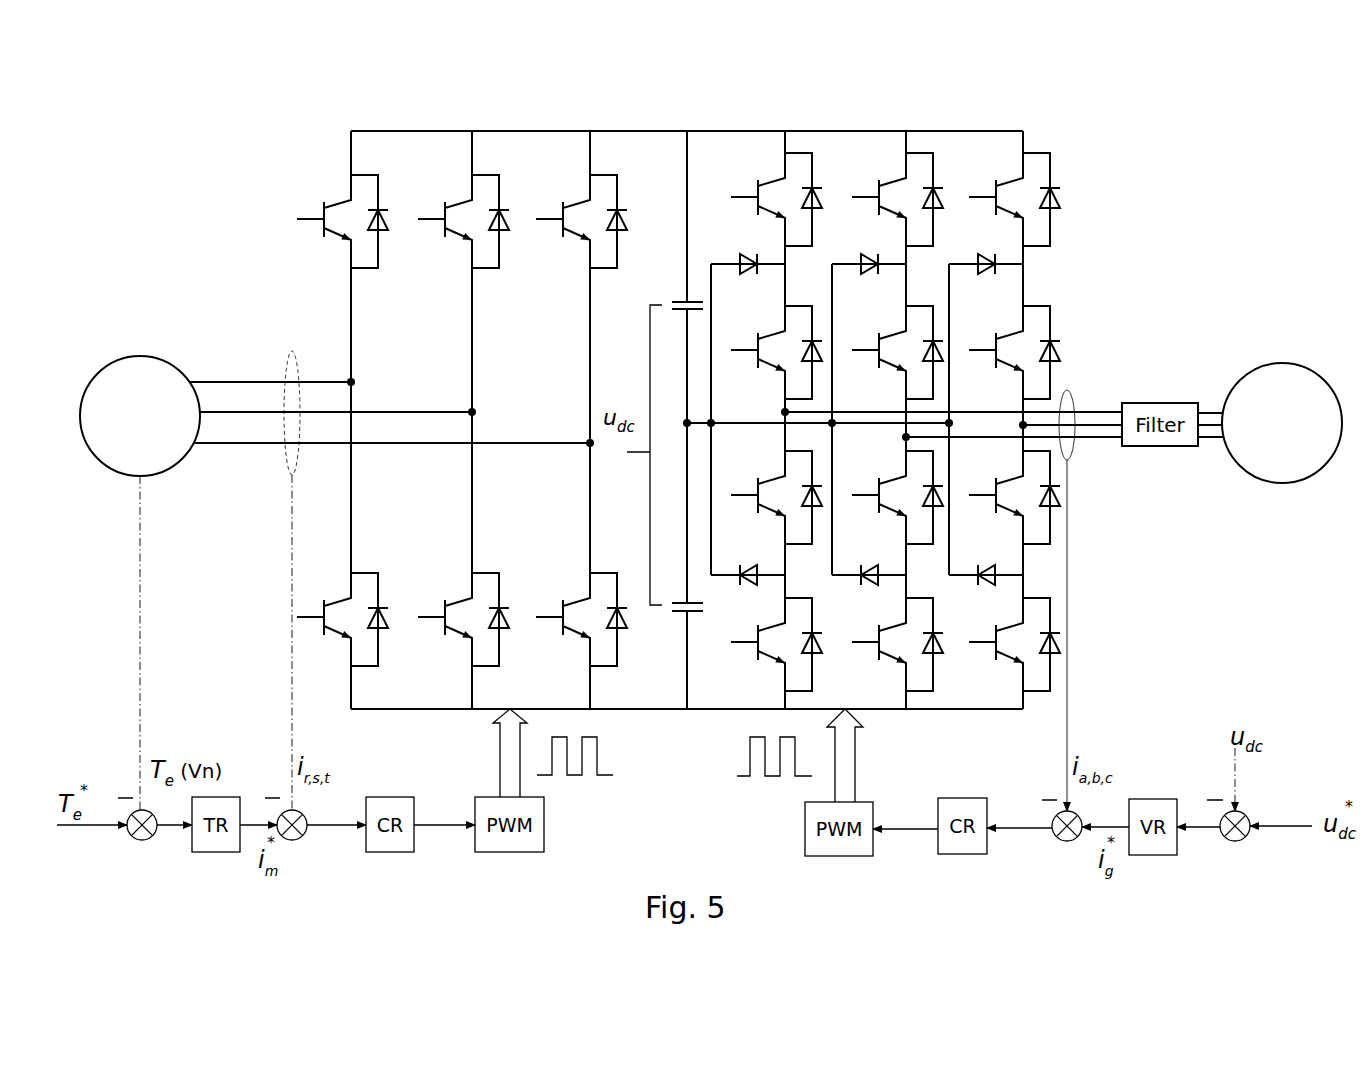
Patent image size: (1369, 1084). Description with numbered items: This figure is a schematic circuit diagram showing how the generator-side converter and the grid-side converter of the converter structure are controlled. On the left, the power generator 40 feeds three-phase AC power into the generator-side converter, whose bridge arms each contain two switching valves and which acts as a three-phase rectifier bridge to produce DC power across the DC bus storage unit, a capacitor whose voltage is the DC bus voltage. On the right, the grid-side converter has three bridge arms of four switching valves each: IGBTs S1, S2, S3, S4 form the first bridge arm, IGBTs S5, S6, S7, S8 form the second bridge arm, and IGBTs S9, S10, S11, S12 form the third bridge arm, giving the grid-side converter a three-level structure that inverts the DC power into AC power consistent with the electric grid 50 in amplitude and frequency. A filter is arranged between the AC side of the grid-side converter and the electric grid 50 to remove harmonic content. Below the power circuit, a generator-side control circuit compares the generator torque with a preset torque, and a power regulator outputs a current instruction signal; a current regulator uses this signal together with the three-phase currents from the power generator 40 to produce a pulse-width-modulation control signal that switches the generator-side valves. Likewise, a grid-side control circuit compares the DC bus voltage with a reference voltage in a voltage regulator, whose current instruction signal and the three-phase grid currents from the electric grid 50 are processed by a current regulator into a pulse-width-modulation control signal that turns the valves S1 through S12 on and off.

The power generator 40 is at (150, 357).
The electric grid 50 is at (1273, 364).
The IGBT S1 is at (769, 199).
The IGBT S2 is at (776, 352).
The IGBT S3 is at (776, 497).
The IGBT S4 is at (776, 644).
The IGBT S5 is at (895, 199).
The IGBT S6 is at (895, 352).
The IGBT S7 is at (897, 497).
The IGBT S8 is at (897, 644).
The IGBT S9 is at (1012, 199).
The IGBT S10 is at (1014, 352).
The IGBT S11 is at (1014, 497).
The IGBT S12 is at (1014, 644).